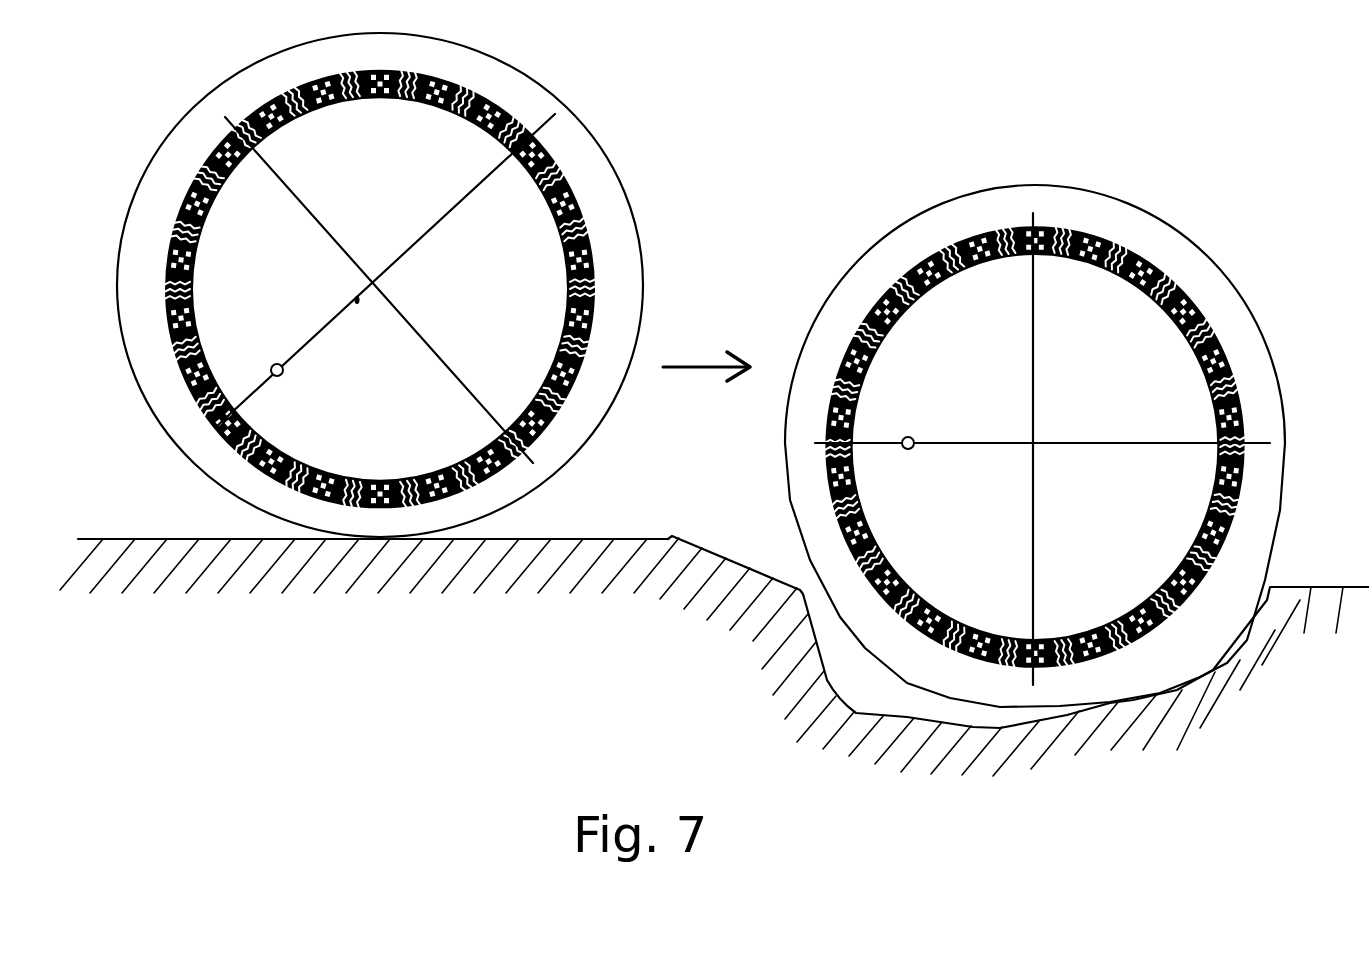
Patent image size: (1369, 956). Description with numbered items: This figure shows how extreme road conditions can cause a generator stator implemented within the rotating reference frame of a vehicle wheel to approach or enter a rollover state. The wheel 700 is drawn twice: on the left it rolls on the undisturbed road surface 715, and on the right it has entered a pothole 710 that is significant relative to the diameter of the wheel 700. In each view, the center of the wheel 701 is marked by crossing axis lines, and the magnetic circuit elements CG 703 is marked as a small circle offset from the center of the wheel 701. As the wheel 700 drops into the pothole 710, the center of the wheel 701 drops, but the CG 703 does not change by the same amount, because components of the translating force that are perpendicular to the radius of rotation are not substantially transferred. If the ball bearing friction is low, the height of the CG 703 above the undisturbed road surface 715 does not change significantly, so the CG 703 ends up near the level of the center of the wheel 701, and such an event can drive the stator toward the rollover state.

The wheel 700 is at (565, 112).
The center of the wheel 701 is at (385, 282).
The type 2 magnetic circuit elements CG 703 is at (275, 355).
The pothole 710 is at (858, 680).
The undisturbed road surface 715 is at (147, 539).